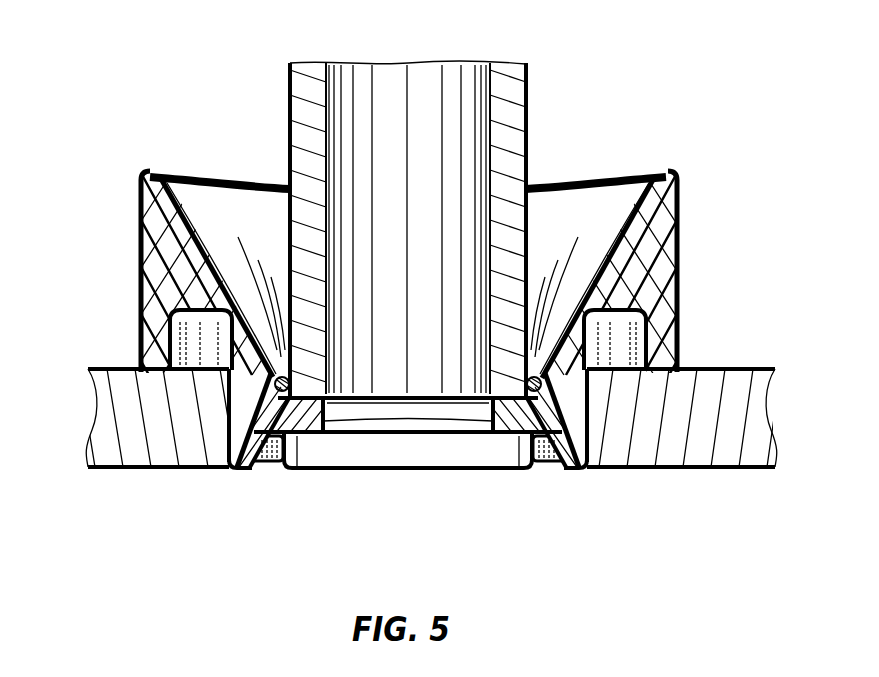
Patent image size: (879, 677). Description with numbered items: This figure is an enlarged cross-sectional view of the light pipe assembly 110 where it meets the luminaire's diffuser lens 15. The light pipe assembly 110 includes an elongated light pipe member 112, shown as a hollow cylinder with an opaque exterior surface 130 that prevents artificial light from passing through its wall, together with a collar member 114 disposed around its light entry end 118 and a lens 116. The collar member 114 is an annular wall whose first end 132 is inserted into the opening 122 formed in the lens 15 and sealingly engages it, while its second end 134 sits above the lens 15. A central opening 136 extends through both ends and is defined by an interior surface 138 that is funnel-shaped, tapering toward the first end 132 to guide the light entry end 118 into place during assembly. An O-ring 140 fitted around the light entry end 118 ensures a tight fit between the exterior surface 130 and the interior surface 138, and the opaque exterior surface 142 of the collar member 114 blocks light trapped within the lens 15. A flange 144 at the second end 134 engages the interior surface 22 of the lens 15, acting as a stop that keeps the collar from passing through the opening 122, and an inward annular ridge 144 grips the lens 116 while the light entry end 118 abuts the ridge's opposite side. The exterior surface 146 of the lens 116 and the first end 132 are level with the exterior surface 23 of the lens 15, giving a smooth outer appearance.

The light pipe assembly 110 is at (214, 93).
The elongated light pipe member 112 is at (538, 91).
The collar member 114 is at (684, 261).
The lens 116 is at (465, 481).
The light entry end 118 is at (512, 266).
The opening 122 is at (281, 482).
The exterior surface 130 is at (528, 172).
The first end 132 is at (572, 438).
The second end 134 is at (672, 178).
The opening 136 is at (269, 194).
The interior surface 138 is at (218, 208).
The O-ring 140 is at (274, 370).
The exterior surface 142 is at (545, 418).
The flange 144 is at (668, 318).
The exterior surface 146 is at (347, 472).
The lens 15 is at (78, 447).
The interior surface 22 is at (122, 368).
The exterior surface 23 is at (137, 470).